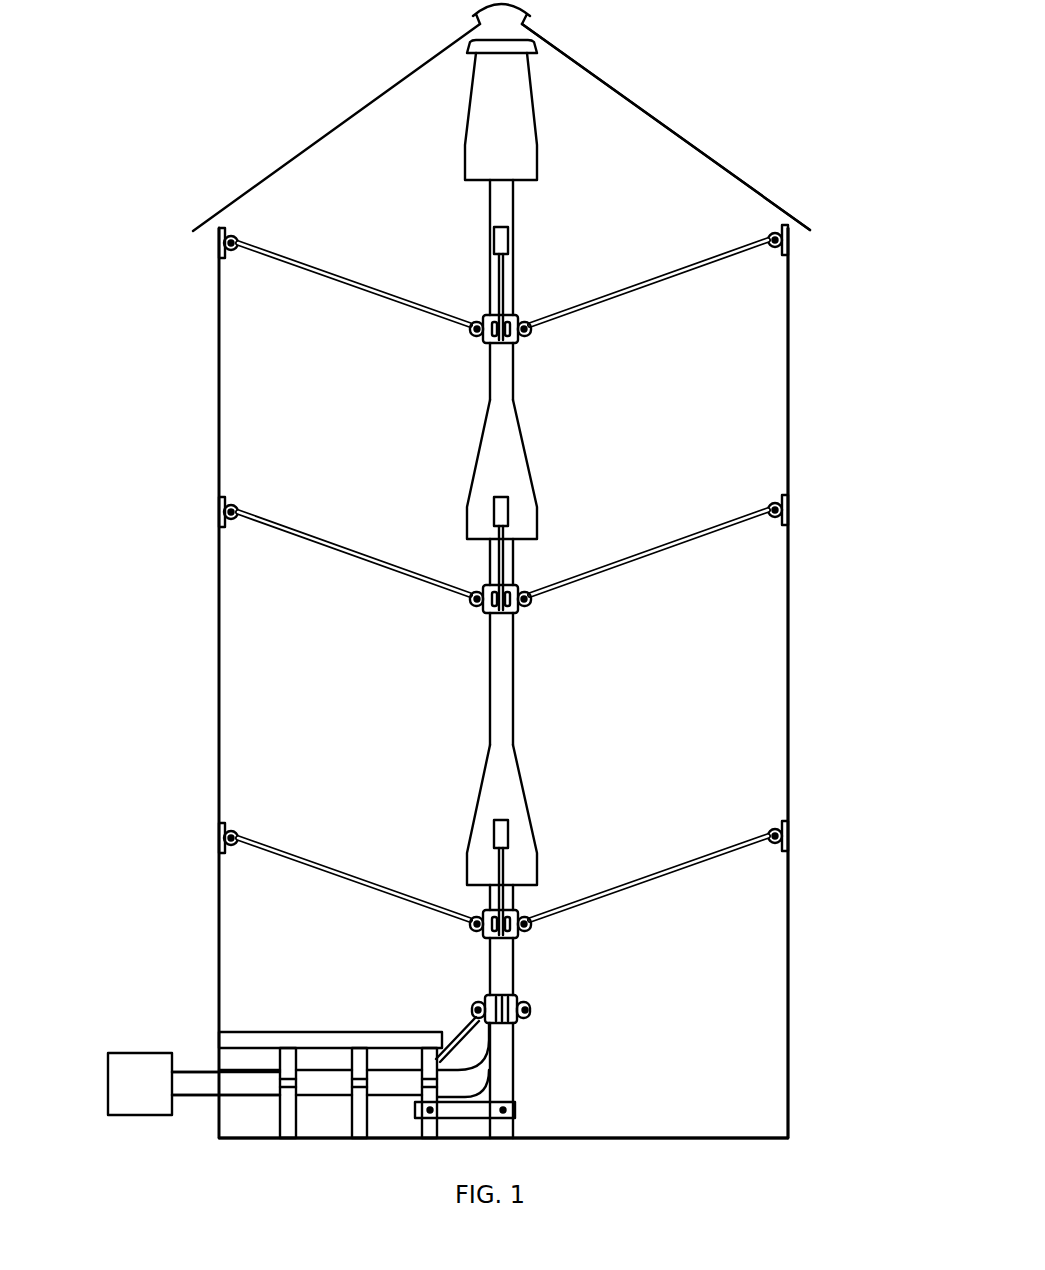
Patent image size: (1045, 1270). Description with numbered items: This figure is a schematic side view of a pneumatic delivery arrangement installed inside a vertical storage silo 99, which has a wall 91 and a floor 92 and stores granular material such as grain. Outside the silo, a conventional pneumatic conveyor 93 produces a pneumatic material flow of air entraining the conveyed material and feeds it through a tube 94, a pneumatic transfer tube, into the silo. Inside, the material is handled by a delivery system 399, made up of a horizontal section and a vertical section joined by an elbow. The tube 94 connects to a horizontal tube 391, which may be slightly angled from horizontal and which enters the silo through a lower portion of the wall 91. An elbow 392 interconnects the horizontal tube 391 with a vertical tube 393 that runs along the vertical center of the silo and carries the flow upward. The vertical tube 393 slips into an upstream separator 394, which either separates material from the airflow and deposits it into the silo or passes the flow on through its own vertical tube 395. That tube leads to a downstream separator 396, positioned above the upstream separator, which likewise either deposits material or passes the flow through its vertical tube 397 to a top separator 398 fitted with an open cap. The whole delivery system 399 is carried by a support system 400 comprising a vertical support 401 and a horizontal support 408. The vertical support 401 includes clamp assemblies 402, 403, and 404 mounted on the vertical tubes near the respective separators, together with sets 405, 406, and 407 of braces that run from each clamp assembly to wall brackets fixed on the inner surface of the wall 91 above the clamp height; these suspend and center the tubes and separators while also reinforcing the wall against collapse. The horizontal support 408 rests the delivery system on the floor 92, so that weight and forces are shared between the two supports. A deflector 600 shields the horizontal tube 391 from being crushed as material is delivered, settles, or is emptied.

The vertical storage silo 99 is at (160, 367).
The silo wall 91 is at (215, 424).
The floor 92 is at (745, 1138).
The pneumatic conveyor 93 is at (107, 1052).
The tube 94 is at (202, 1070).
The horizontal tube 391 is at (247, 1092).
The elbow 392 is at (512, 1040).
The vertical tube 393 is at (515, 965).
The upstream separator 394 is at (527, 805).
The vertical tube 395 is at (515, 660).
The downstream separator 396 is at (527, 457).
The vertical tube 397 is at (515, 370).
The top separator 398 is at (533, 100).
The delivery system 399 is at (675, 720).
The support system 400 is at (812, 1002).
The vertical support 401 is at (798, 883).
The clamp assembly 402 is at (458, 930).
The clamp assembly 403 is at (458, 604).
The clamp assembly 404 is at (458, 335).
The set of braces 405 is at (677, 893).
The set of braces 406 is at (677, 572).
The set of braces 407 is at (675, 298).
The horizontal support 408 is at (358, 1152).
The deflector 600 is at (318, 1003).